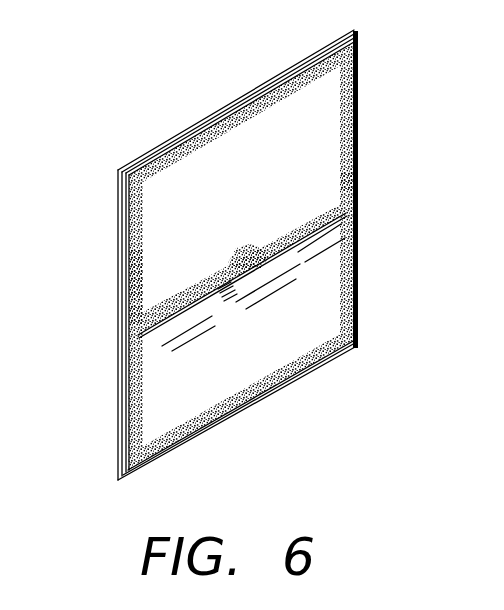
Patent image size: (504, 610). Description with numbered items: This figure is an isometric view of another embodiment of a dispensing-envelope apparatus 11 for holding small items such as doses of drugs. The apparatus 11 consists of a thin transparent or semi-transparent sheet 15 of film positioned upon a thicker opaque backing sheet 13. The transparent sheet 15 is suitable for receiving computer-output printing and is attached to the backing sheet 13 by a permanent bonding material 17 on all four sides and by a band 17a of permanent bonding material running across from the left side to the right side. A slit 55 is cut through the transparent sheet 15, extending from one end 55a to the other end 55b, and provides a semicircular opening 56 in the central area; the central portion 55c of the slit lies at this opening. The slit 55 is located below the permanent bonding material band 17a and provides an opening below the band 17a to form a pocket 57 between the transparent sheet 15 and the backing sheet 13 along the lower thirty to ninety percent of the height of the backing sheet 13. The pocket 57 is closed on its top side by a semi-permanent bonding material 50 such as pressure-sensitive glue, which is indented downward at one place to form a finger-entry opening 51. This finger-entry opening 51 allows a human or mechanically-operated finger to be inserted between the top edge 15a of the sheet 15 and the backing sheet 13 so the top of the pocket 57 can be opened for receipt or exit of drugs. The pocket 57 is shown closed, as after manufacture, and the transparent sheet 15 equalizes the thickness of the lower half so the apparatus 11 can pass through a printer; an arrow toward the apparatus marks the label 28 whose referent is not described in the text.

The dispensing-envelope apparatus 11 is at (358, 220).
The backing sheet 13 is at (282, 71).
The transparent sheet 15 is at (317, 133).
The top edge of sheet 15a is at (248, 258).
The permanent bonding material 17 is at (180, 148).
The permanent bonding material band 17a is at (170, 300).
The adjacent structure 28 is at (494, 215).
The semi-permanent bonding material 50 is at (297, 250).
The finger-entry opening 51 is at (243, 277).
The slit 55 is at (337, 213).
The slit end 55a is at (345, 181).
The slit end 55b is at (133, 312).
The divider strip central portion 55c is at (236, 260).
The semicircular opening 56 is at (241, 256).
The pocket 57 is at (216, 362).